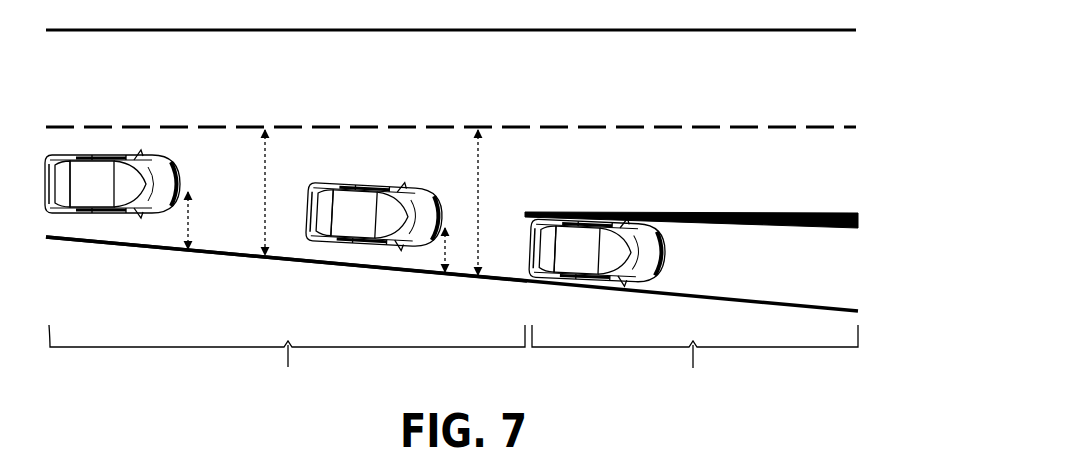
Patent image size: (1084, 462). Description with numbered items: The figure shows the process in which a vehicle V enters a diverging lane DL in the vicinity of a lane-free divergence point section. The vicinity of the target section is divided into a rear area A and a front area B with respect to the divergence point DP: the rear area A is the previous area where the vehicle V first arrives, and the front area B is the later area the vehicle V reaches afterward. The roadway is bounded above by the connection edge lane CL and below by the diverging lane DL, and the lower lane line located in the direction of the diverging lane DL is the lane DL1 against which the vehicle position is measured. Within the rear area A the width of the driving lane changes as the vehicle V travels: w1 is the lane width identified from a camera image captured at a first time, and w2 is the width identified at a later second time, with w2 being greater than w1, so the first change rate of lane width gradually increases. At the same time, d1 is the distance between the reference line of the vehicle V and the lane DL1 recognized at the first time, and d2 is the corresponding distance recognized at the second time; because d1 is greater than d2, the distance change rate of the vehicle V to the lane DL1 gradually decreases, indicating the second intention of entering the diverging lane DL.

The vehicle V is at (182, 187).
The connection edge lane CL is at (864, 172).
The diverging lane DL is at (864, 282).
The lane located in the direction of the diverging lane DL1 is at (380, 273).
The divergence point DP is at (524, 208).
The distance at first time d1 is at (204, 220).
The distance at second time d2 is at (461, 250).
The driving lane width at first time w1 is at (284, 192).
The driving lane width at second time w2 is at (498, 202).
The rear area A is at (287, 363).
The front area B is at (695, 364).